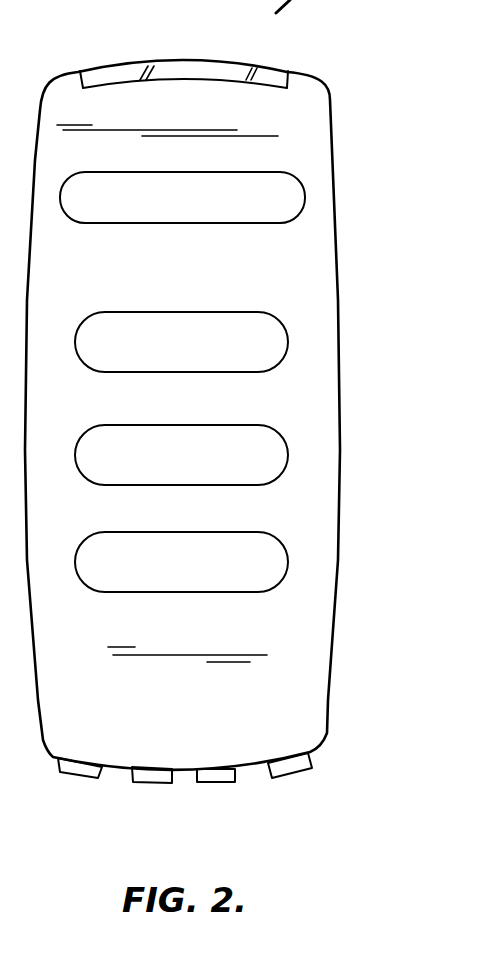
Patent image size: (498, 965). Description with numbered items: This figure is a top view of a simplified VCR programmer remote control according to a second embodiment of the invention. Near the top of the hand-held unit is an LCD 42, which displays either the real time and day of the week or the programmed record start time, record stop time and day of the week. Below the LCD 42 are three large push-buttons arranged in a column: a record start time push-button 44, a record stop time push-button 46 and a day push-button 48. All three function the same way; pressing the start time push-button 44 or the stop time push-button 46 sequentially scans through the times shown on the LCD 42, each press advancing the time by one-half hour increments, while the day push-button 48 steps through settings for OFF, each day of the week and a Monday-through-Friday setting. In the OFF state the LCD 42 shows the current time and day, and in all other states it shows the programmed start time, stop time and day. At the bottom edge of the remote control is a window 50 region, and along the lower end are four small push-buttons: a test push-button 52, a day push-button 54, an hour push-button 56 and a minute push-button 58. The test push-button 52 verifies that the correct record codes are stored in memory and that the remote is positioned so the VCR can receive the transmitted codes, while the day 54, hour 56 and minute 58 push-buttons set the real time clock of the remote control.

The LCD 42 is at (290, 188).
The record start time push-button 44 is at (277, 336).
The record stop time push-button 46 is at (272, 454).
The day push-button 48 is at (263, 569).
The window 50 is at (110, 74).
The test push-button 52 is at (80, 772).
The day push-button 54 is at (157, 778).
The hour push-button 56 is at (220, 780).
The minute push-button 58 is at (293, 775).